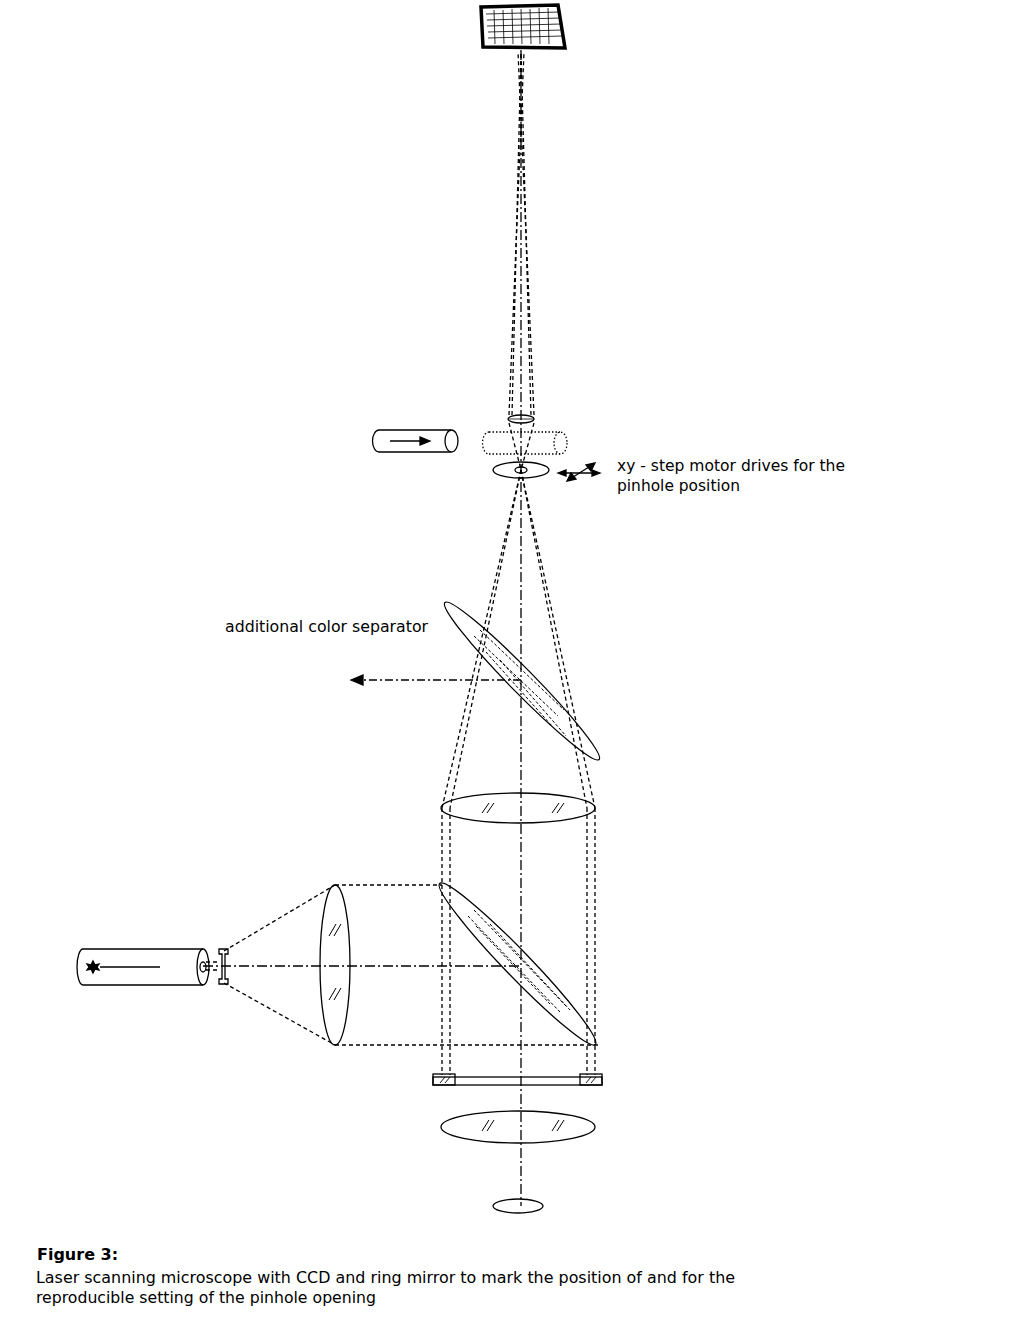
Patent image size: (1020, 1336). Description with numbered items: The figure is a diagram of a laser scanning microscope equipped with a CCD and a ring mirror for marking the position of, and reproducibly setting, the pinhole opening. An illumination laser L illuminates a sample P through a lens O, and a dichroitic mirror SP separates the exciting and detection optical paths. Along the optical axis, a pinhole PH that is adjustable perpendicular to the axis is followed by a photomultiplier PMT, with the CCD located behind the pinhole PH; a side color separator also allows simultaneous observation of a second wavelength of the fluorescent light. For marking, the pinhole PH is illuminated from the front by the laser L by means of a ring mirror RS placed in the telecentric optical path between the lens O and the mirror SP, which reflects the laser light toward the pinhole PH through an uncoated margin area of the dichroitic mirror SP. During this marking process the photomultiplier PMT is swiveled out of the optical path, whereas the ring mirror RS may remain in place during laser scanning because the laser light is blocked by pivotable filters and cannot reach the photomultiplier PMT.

The element CCD is at (627, 31).
The photomultiplier PMT is at (407, 423).
The pinhole PH is at (487, 479).
The dichroitic mirror SP is at (532, 963).
The illumination laser L is at (143, 985).
The ring mirror RS is at (537, 1079).
The lens O is at (539, 1130).
The sample P is at (531, 1206).